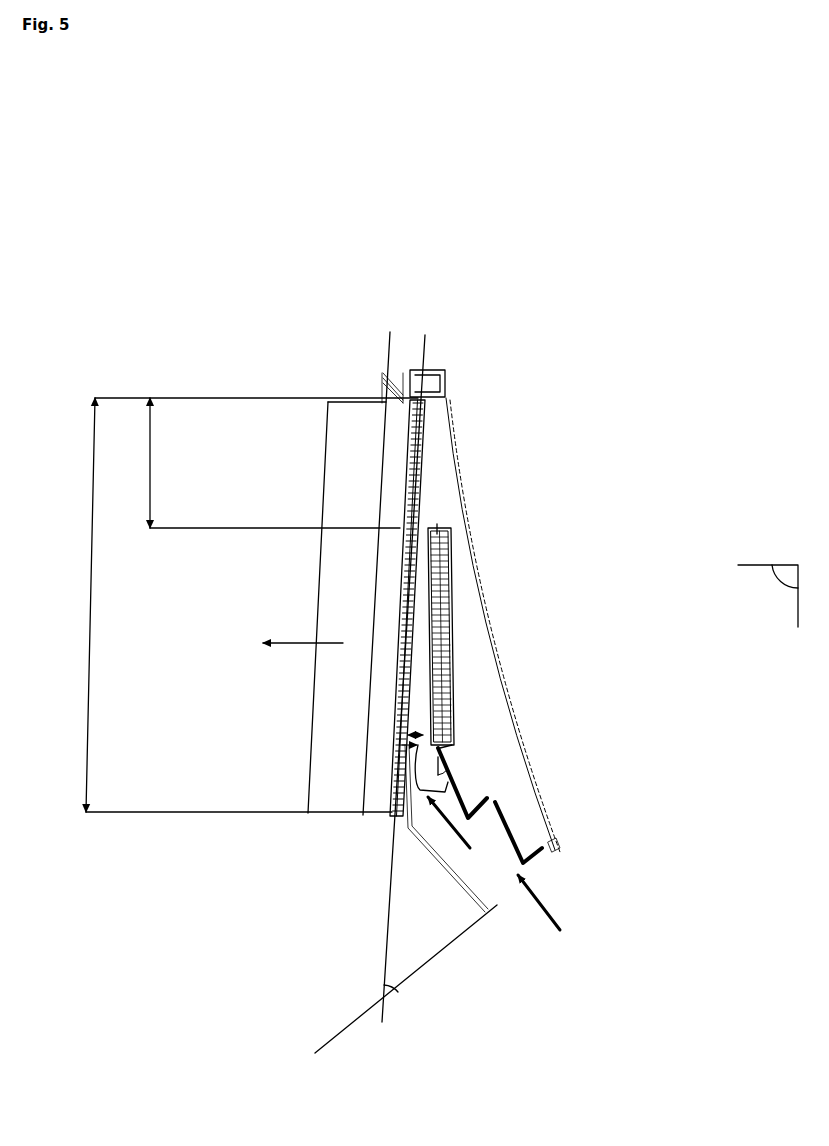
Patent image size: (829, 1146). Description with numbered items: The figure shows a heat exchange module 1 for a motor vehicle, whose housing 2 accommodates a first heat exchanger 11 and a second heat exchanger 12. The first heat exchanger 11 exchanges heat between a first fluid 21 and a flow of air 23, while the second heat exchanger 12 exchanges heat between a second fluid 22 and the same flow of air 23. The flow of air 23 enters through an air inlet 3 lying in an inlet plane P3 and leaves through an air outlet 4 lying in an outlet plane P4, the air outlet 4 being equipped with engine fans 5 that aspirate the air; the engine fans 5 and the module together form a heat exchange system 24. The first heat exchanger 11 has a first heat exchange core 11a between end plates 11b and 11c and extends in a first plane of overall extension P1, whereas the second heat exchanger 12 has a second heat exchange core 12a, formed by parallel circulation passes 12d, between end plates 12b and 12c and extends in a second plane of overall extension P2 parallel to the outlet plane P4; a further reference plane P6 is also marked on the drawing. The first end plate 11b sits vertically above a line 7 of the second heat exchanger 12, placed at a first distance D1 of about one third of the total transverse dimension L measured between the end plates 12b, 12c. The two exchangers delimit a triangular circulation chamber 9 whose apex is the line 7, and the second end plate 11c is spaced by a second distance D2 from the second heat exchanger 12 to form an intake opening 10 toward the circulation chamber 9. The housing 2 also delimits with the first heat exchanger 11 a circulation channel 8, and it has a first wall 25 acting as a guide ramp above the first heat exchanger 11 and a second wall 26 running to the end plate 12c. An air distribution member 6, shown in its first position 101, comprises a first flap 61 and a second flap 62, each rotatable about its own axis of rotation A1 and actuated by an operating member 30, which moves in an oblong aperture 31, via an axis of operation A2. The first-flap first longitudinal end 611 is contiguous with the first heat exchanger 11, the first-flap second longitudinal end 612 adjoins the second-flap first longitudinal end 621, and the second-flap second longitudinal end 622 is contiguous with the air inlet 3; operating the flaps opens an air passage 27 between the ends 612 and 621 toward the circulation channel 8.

The heat exchange module 1 is at (557, 525).
The housing 2 is at (464, 747).
The air inlet 3 is at (520, 882).
The air outlet 4 is at (373, 573).
The engine fans 5 is at (344, 611).
The air distribution member 6 is at (497, 905).
The line 7 is at (400, 527).
The circulation channel 8 is at (470, 692).
The circulation chamber 9 is at (397, 652).
The intake opening 10 is at (417, 757).
The first heat exchanger 11 is at (450, 620).
The first heat exchange core 11a is at (457, 600).
The first end plate 11b is at (437, 527).
The second end plate 11c is at (456, 740).
The second heat exchanger 12 is at (423, 475).
The second heat exchange core 12a is at (397, 512).
The first end plate 12b is at (420, 382).
The second end plate 12c is at (392, 832).
The circulation passes 12d is at (397, 458).
The first fluid 21 is at (450, 665).
The second fluid 22 is at (445, 493).
The flow of air 23 is at (300, 643).
The heat exchange system 24 is at (233, 432).
The first wall 25 is at (480, 563).
The second wall 26 is at (393, 851).
The air passage 27 is at (507, 815).
The operating member 30 is at (553, 837).
The oblong aperture 31 is at (523, 877).
The first flap 61 is at (472, 748).
The second flap 62 is at (492, 860).
The first position 101 is at (657, 775).
The first-flap first longitudinal end 611 is at (445, 792).
The first-flap second longitudinal end 612 is at (510, 798).
The second-flap first longitudinal end 621 is at (553, 820).
The second-flap second longitudinal end 622 is at (522, 867).
The axis of rotation A1 is at (497, 743).
The axis of operation A2 is at (475, 787).
The first distance D1 is at (260, 463).
The second distance D2 is at (397, 700).
The total transverse dimension L is at (242, 605).
The first plane of overall extension P1 is at (440, 515).
The second plane of overall extension P2 is at (418, 673).
The inlet plane P3 is at (406, 979).
The outlet plane P4 is at (376, 569).
The sixth plane P6 is at (768, 596).